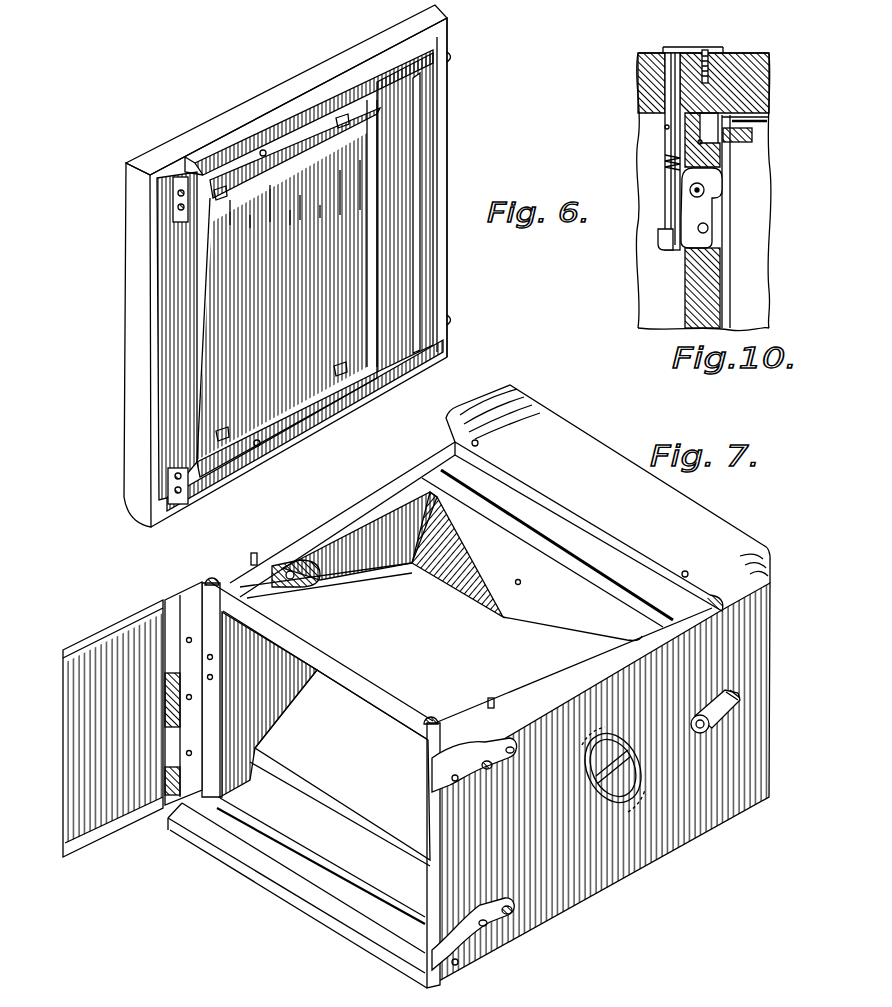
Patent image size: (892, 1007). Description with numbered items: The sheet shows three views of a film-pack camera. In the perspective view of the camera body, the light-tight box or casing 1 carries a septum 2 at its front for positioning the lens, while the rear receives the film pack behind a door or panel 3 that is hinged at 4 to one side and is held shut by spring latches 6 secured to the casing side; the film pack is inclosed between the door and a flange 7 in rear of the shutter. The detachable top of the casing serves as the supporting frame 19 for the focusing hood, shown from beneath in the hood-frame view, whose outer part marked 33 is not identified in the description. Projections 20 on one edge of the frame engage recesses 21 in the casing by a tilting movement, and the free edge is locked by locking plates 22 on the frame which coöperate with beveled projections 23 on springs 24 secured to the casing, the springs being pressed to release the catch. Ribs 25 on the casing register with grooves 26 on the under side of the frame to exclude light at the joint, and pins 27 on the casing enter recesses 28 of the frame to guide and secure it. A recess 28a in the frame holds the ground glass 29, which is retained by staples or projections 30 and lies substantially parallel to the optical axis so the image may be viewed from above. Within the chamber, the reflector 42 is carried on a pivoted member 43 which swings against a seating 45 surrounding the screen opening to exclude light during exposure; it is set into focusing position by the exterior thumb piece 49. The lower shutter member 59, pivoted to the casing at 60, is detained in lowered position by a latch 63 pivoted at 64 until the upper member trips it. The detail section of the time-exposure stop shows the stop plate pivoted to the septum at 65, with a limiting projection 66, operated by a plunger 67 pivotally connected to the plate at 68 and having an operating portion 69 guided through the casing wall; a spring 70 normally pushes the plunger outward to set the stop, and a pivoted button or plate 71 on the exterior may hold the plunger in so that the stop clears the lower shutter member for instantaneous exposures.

In FIG. 10, the box or casing 1 is at (748, 55).
In FIG. 7, the box or casing 1 is at (652, 852).
In FIG. 10, the septum 2 is at (690, 277).
In FIG. 7, the door or panel 3 is at (100, 640).
In FIG. 7, the hinge 4 is at (180, 660).
In FIG. 7, the spring latches 6 is at (498, 768).
In FIG. 7, the flange 7 is at (212, 800).
In FIG. 6, the supporting frame 19 is at (453, 177).
In FIG. 6, the projections 20 is at (451, 56).
In FIG. 7, the recesses 21 is at (480, 442).
In FIG. 6, the locking plates 22 is at (177, 203).
In FIG. 7, the projections 23 is at (212, 578).
In FIG. 7, the springs 24 is at (213, 630).
In FIG. 7, the ribs 25 is at (358, 500).
In FIG. 6, the grooves 26 is at (285, 130).
In FIG. 7, the pins 27 is at (254, 552).
In FIG. 6, the recesses 28 is at (264, 157).
In FIG. 6, the recess 28a is at (367, 265).
In FIG. 6, the ground glass 29 is at (282, 296).
In FIG. 6, the staples or projections 30 is at (343, 127).
In FIG. 6, the outer panel 33 is at (135, 340).
In FIG. 7, the reflector 42 is at (516, 632).
In FIG. 7, the member 43 is at (270, 593).
In FIG. 7, the seating 45 is at (393, 554).
In FIG. 7, the thumb piece or operating handle 49 is at (630, 758).
In FIG. 10, the lower member 59 is at (745, 221).
In FIG. 7, the lower member 59 is at (340, 768).
In FIG. 7, the pivot 60 is at (268, 704).
In FIG. 10, the latch 63 is at (731, 142).
In FIG. 10, the latch pivot 64 is at (712, 200).
In FIG. 10, the pivot 65 is at (710, 231).
In FIG. 10, the limiting projection 66 is at (704, 190).
In FIG. 10, the plunger 67 is at (665, 188).
In FIG. 10, the pivotal connection 68 is at (660, 240).
In FIG. 10, the operating portion 69 is at (668, 82).
In FIG. 10, the spring 70 is at (666, 129).
In FIG. 10, the pivoted button or plate 71 is at (704, 50).
In FIG. 7, the pivoted button or plate 71 is at (728, 690).